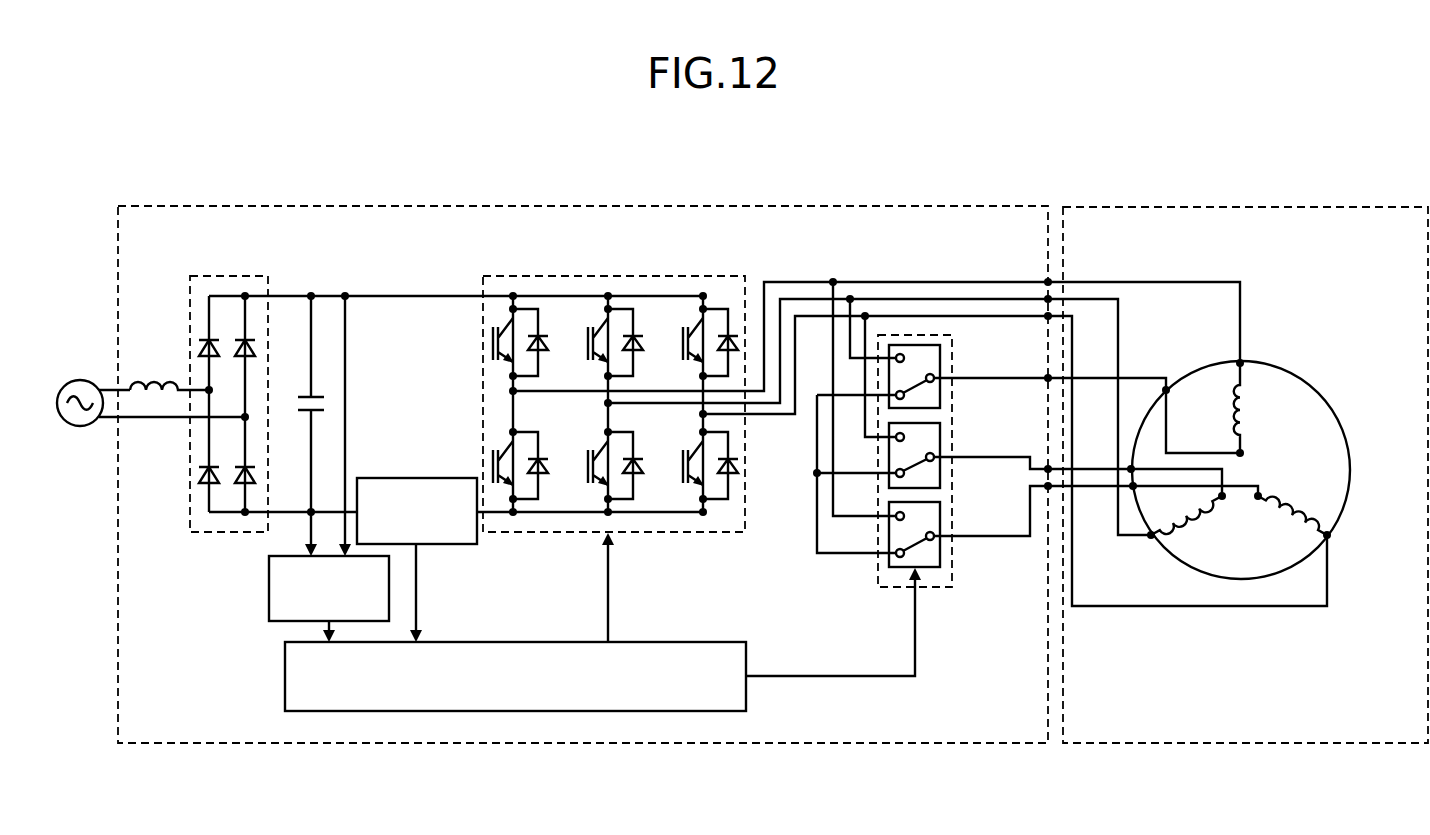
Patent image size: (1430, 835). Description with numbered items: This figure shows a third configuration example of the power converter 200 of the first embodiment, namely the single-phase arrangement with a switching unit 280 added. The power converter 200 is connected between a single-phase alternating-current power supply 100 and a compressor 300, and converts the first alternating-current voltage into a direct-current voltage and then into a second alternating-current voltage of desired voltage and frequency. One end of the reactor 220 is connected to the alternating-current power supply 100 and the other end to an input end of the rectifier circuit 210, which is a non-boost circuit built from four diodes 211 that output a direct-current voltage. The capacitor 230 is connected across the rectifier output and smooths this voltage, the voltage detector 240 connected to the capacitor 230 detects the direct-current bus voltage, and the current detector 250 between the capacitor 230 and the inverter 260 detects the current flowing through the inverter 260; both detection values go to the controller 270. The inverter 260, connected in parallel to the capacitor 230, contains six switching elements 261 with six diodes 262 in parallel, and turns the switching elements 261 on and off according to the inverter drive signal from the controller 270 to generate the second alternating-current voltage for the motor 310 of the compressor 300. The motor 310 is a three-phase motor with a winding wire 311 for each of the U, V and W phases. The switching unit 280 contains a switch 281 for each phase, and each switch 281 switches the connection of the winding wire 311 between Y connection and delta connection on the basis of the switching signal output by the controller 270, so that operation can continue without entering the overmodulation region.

The alternating-current power supply 100 is at (78, 379).
The power converter 200 is at (707, 206).
The rectifier circuit 210 is at (201, 381).
The diode 211 is at (200, 475).
The reactor 220 is at (151, 370).
The capacitor 230 is at (318, 395).
The voltage detector 240 is at (269, 583).
The current detector 250 is at (445, 548).
The inverter 260 is at (585, 381).
The switching element 261 is at (495, 345).
The diode 262 is at (543, 339).
The controller 270 is at (285, 673).
The switching unit 280 is at (913, 434).
The switch 281 is at (930, 398).
The compressor 300 is at (1261, 205).
The motor 310 is at (1241, 446).
The winding wire 311 is at (1220, 403).